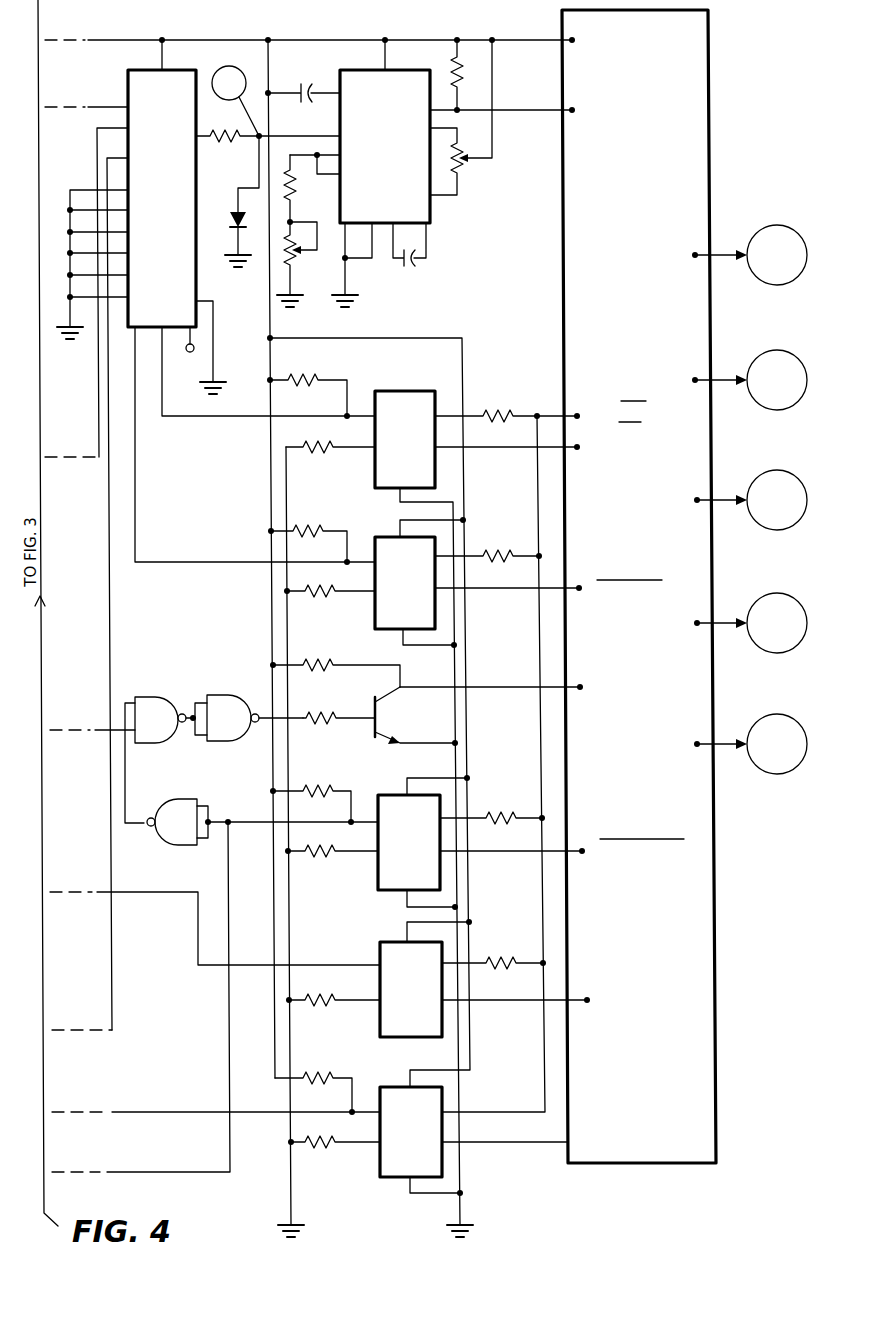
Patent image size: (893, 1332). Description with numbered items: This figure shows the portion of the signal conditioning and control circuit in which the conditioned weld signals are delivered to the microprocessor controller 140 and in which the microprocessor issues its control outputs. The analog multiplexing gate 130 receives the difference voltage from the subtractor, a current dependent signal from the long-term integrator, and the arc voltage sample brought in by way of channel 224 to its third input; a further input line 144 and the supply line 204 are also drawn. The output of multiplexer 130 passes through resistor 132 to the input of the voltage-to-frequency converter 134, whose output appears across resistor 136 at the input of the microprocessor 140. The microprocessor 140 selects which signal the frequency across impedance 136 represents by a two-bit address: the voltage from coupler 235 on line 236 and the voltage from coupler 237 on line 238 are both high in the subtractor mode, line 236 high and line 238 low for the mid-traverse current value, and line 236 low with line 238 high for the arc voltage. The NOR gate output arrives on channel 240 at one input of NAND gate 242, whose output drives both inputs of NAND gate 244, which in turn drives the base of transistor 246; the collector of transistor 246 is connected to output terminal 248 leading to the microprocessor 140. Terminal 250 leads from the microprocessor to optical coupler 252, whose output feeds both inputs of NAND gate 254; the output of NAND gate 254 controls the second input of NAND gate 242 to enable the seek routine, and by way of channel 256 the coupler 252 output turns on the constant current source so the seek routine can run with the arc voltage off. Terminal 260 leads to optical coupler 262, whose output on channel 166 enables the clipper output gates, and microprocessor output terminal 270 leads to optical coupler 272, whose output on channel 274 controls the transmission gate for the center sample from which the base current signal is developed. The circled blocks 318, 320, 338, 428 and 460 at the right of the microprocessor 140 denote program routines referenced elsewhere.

The analog multiplexing gate 130 is at (182, 166).
The resistor 132 is at (247, 140).
The voltage-to-frequency converter 134 is at (405, 128).
The resistor 136 is at (467, 67).
The microprocessor controller 140 is at (646, 114).
The input line from FIG. 3 144 is at (98, 437).
The channel 166 is at (184, 890).
The supply line 204 is at (406, 37).
The channel 224 is at (113, 1005).
The coupler 235 is at (425, 452).
The line 236 is at (232, 418).
The coupler 237 is at (425, 596).
The line 238 is at (215, 562).
The channel 240 is at (103, 729).
The NAND gate 242 is at (156, 708).
The NAND gate 244 is at (232, 707).
The transistor 246 is at (387, 700).
The output terminal 248 is at (523, 686).
The terminal 250 is at (533, 852).
The optical coupler 252 is at (429, 855).
The NAND gate 254 is at (176, 817).
The channel 256 is at (187, 1173).
The terminal 260 is at (533, 1001).
The optical coupler 262 is at (431, 1002).
The microprocessor output terminal 270 is at (546, 1143).
The optical coupler 272 is at (431, 1145).
The channel 274 is at (193, 1114).
The program routine 318 is at (797, 268).
The program routine 320 is at (797, 393).
The program routine 338 is at (797, 513).
The program routine 428 is at (797, 636).
The program routine 460 is at (797, 757).